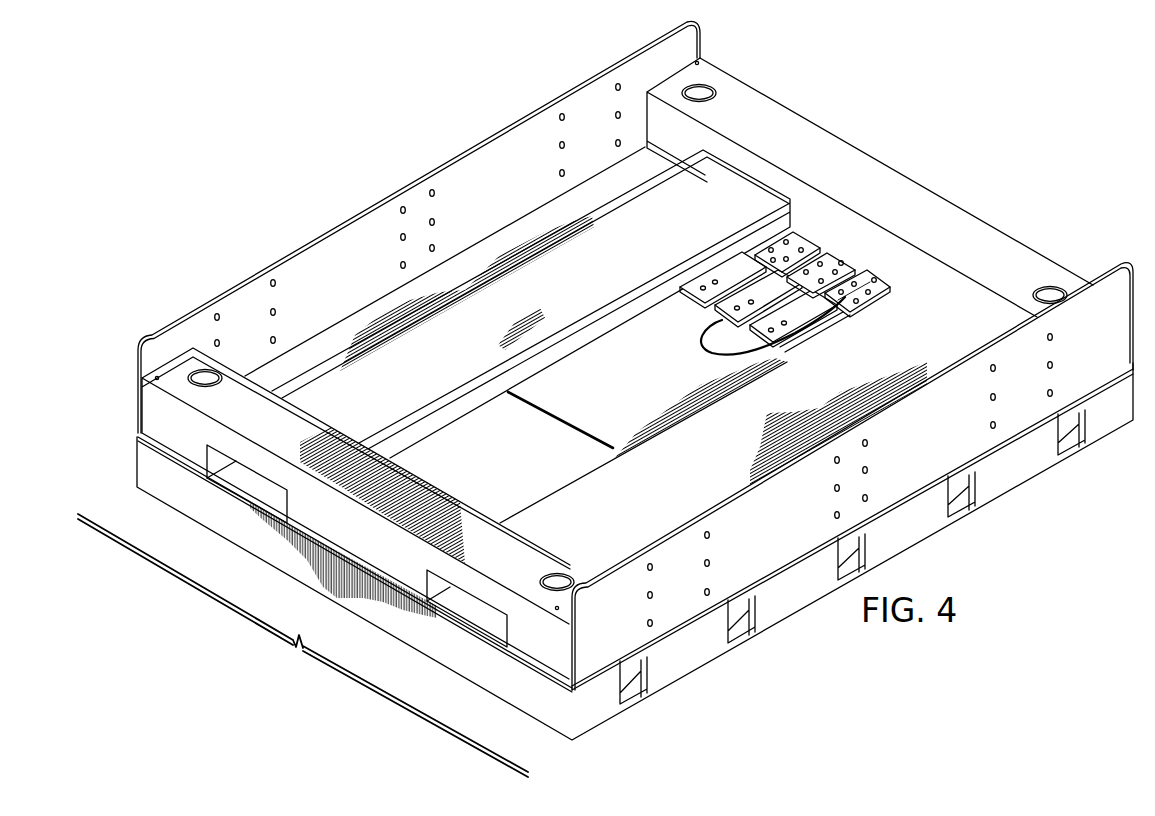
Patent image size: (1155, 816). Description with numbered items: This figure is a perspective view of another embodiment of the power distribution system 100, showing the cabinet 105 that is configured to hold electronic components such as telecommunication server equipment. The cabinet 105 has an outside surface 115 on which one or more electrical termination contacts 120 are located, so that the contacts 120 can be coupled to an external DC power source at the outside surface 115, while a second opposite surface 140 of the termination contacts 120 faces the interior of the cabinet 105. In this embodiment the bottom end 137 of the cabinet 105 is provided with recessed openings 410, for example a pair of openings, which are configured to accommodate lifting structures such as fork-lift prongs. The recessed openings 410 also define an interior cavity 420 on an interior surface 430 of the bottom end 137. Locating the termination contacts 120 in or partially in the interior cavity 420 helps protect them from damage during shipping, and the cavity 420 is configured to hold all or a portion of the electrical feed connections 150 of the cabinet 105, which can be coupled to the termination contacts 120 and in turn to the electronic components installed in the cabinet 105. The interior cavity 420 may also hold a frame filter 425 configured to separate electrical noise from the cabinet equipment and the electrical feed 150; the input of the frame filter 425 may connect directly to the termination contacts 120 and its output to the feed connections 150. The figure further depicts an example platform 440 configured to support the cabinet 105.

The power distribution system 100 is at (615, 399).
The cabinet 105 is at (319, 228).
The outside surface 115 is at (722, 583).
The electrical termination contacts 120 is at (725, 263).
The second opposite surface 140 is at (757, 252).
The electrical feed connections 150 is at (702, 342).
The frame filter 425 is at (833, 273).
The interior cavity 420 is at (477, 399).
The interior surface 430 is at (443, 438).
The recessed openings 410 is at (255, 488).
The platform 440 is at (1114, 436).
The bottom end 137 is at (303, 645).